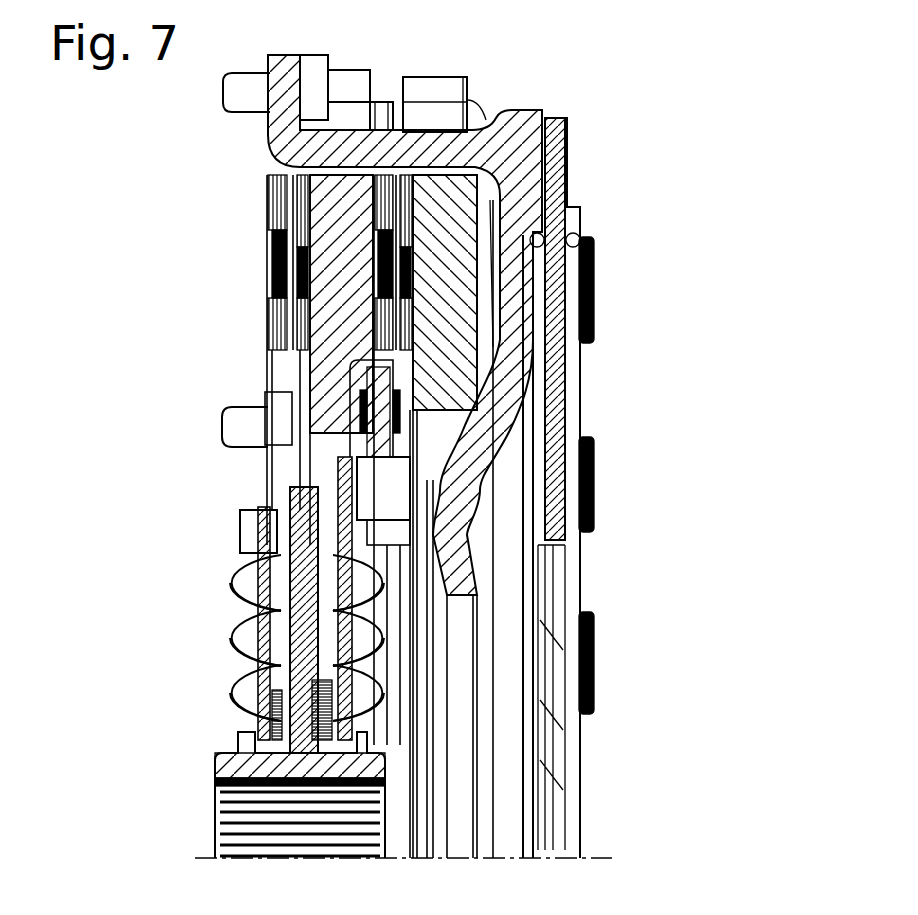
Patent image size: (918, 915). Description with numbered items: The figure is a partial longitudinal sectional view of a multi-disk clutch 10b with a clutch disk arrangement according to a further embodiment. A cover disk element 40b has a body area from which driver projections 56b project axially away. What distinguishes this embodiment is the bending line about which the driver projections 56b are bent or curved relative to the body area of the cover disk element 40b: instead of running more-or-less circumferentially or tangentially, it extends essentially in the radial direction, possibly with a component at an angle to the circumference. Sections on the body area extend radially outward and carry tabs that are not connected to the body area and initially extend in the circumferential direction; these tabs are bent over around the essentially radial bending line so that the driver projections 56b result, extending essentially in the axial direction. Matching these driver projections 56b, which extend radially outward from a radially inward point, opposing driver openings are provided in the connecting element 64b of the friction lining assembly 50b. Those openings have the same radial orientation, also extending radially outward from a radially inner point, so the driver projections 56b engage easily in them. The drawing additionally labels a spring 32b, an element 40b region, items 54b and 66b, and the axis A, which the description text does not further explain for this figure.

The multi-disk clutch 10b is at (695, 122).
The coil spring 32b is at (210, 650).
The cover disk element 40b is at (347, 660).
The friction lining assembly 50b is at (405, 373).
The bearing seat 54b is at (388, 553).
The driver projections 56b is at (397, 485).
The connecting element 64b is at (325, 383).
The pressure plate 66b is at (412, 452).
The axis of rotation A is at (608, 857).